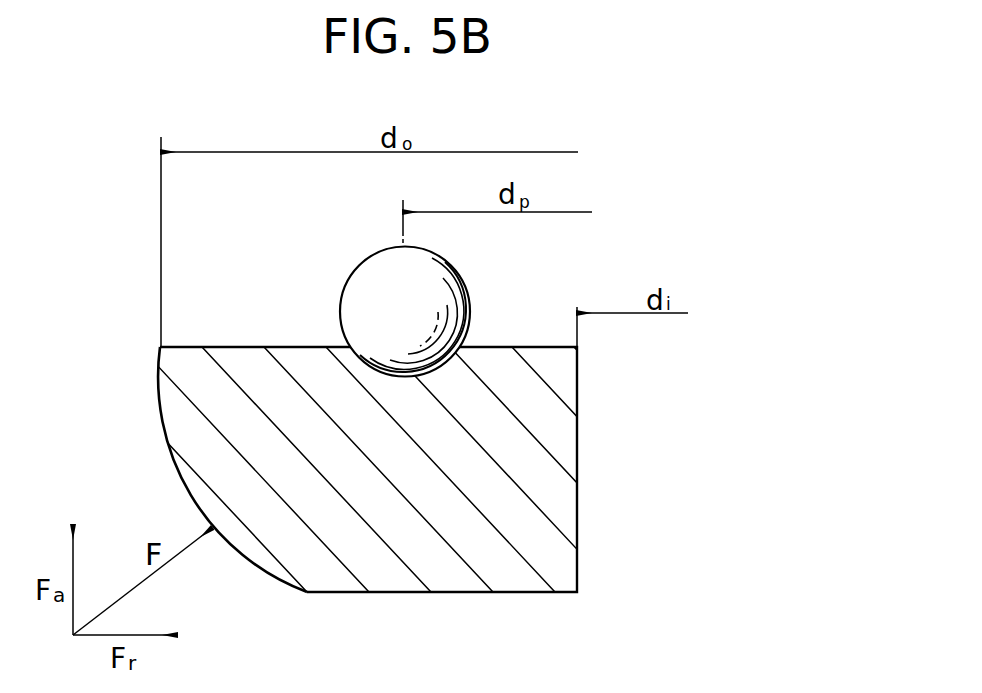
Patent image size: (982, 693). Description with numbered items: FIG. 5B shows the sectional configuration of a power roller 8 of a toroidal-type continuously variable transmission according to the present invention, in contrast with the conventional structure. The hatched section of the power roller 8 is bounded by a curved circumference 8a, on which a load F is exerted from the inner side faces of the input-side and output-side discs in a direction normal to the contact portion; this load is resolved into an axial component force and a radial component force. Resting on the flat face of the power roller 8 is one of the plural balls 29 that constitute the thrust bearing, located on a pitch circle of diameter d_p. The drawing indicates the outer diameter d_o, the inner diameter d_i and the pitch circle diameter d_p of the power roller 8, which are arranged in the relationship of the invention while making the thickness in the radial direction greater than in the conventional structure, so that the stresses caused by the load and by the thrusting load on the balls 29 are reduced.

The power roller 8 is at (173, 362).
The circumference 8a is at (162, 393).
The ball 29 is at (436, 258).